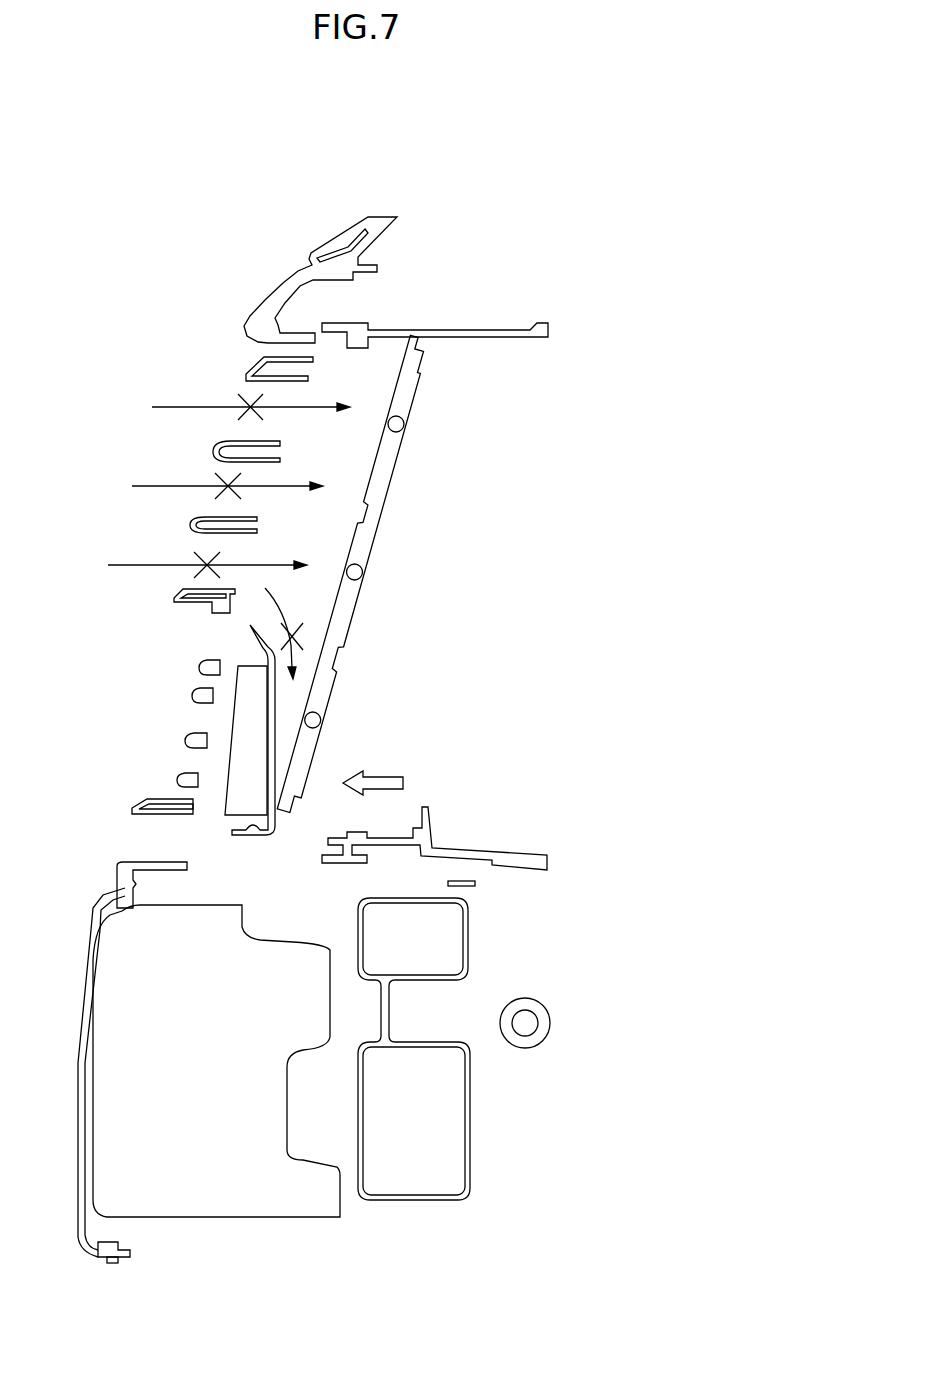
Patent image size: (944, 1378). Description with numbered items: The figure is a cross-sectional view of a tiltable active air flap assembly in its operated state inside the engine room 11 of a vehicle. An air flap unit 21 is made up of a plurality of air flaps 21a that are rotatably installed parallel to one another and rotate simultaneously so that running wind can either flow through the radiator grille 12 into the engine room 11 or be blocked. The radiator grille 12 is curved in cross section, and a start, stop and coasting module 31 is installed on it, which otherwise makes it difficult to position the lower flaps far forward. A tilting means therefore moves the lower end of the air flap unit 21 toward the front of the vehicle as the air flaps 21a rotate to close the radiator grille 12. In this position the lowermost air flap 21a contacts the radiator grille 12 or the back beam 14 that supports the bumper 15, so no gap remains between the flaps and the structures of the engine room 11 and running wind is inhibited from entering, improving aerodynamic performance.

The engine room 11 is at (596, 382).
The radiator grille 12 is at (247, 367).
The air flap unit 21 is at (562, 448).
The air flaps 21a is at (417, 403).
The start, stop and coasting (SSC) module 31 is at (250, 752).
The bumper 15 is at (225, 1200).
The back beam 14 is at (417, 1182).